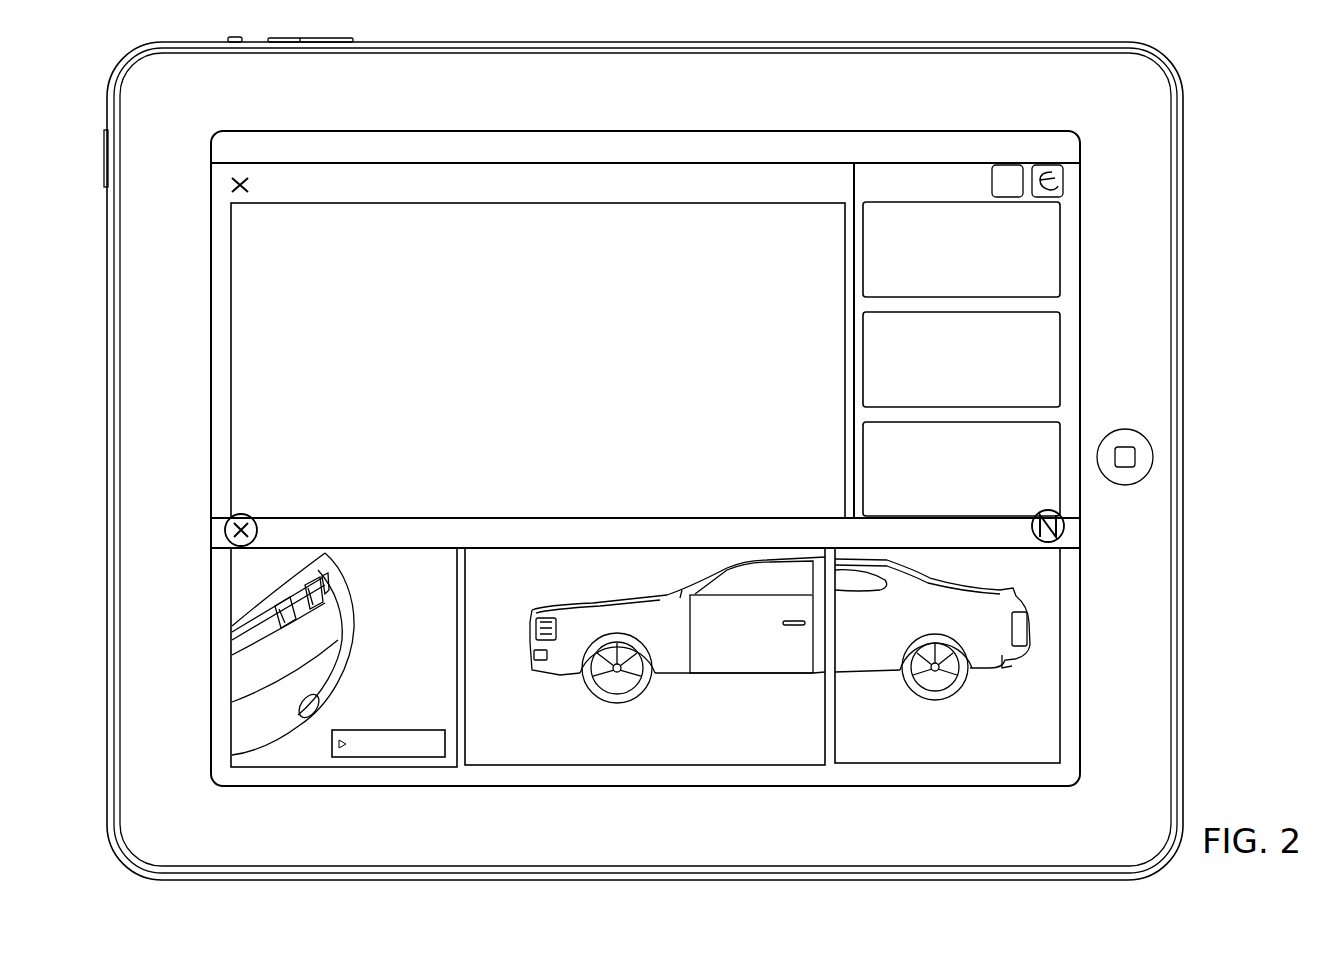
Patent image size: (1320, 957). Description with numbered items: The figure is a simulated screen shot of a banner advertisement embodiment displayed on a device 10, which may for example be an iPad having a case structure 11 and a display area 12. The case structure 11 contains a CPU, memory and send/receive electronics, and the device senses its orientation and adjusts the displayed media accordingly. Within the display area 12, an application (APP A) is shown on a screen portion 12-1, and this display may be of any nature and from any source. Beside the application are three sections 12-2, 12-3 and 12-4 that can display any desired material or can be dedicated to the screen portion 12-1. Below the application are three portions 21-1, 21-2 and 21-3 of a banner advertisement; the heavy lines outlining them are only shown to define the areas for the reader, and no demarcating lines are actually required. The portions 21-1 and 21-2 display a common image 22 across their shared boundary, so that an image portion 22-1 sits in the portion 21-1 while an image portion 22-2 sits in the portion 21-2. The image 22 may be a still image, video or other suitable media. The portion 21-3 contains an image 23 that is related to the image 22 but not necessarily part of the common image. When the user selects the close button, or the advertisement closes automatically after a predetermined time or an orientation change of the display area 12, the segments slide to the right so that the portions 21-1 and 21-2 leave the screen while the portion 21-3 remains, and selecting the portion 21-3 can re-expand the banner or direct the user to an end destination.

The device 10 is at (1222, 169).
The case structure 11 is at (1182, 404).
The display area 12 is at (217, 282).
The screen portion 12-1 is at (229, 365).
The section 12-2 is at (985, 260).
The section 12-3 is at (985, 370).
The section 12-4 is at (985, 480).
The portion of banner advertisement 21-1 is at (1060, 655).
The portion of banner advertisement 21-2 is at (648, 767).
The portion of banner advertisement 21-3 is at (232, 665).
The image 22 is at (775, 675).
The image portion 22-1 is at (867, 675).
The image portion 22-2 is at (576, 604).
The image 23 is at (322, 672).